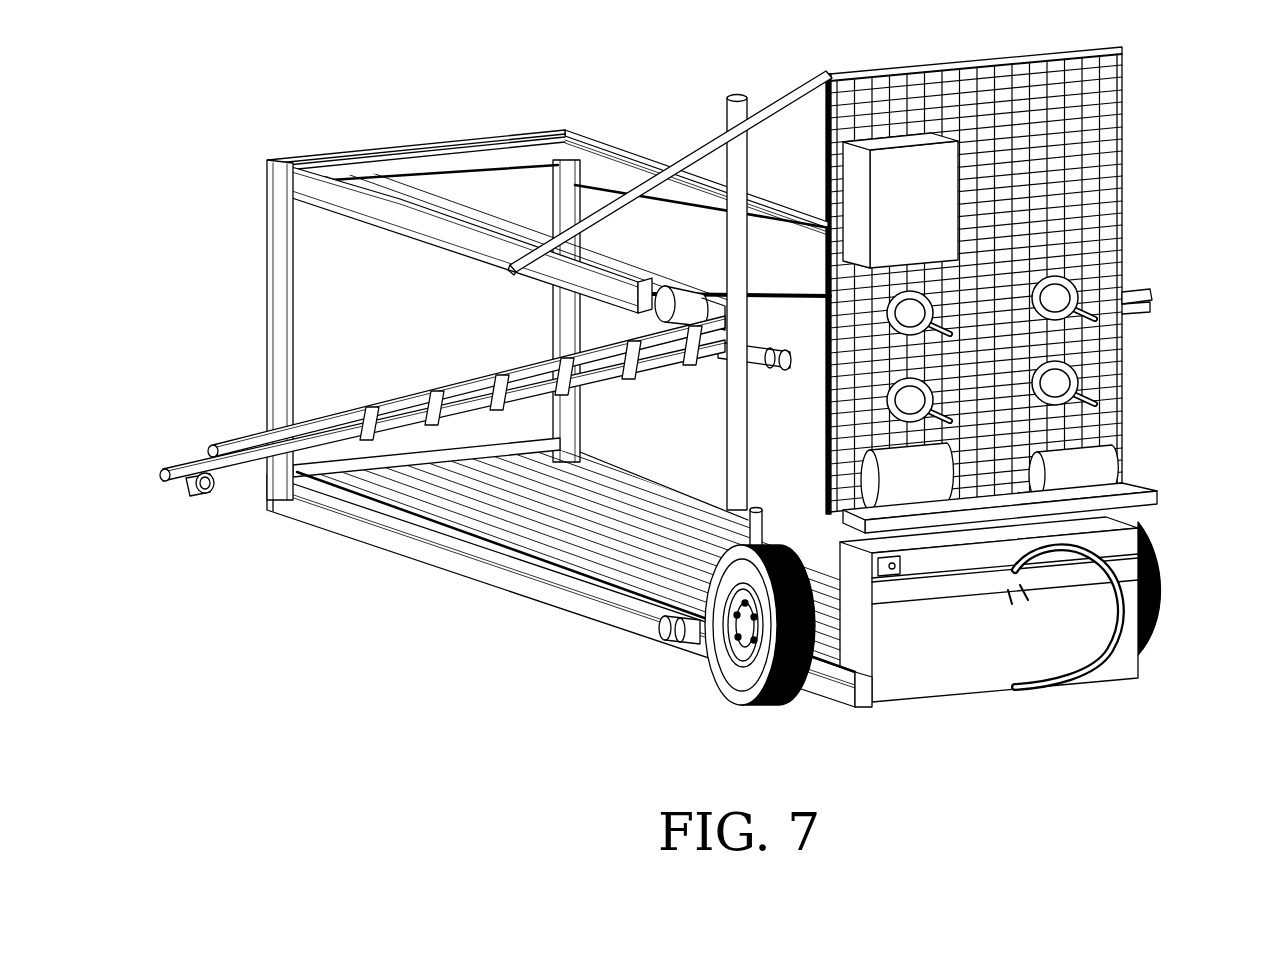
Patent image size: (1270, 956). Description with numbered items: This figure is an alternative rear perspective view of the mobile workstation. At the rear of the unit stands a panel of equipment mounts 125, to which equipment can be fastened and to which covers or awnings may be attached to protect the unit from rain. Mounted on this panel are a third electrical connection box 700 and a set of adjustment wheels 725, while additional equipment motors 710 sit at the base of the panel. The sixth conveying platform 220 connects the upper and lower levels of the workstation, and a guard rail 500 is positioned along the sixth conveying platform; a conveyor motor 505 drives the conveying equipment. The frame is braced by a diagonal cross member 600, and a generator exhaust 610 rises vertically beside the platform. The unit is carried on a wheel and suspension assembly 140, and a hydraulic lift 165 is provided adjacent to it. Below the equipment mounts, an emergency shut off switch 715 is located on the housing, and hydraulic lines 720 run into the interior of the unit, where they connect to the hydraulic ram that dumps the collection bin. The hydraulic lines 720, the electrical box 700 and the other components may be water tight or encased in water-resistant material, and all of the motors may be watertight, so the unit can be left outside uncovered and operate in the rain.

The equipment mounts 125 is at (1095, 118).
The wheel and suspension assembly 140 is at (737, 674).
The hydraulic lift 165 is at (755, 512).
The sixth conveying platform 220 is at (473, 395).
The guard rail 500 is at (395, 388).
The conveyor motor 505 is at (665, 625).
The diagonal cross member 600 is at (815, 80).
The generator exhaust 610 is at (727, 112).
The third electrical connection box 700 is at (928, 178).
The equipment motors 710 is at (930, 493).
The emergency shut off switch 715 is at (905, 572).
The hydraulic lines 720 is at (1108, 652).
The adjustment wheels 725 is at (891, 403).